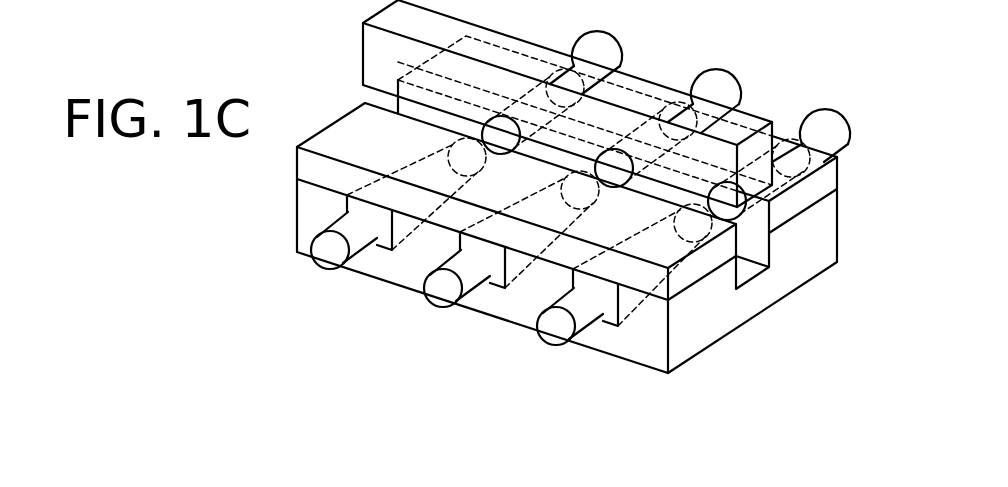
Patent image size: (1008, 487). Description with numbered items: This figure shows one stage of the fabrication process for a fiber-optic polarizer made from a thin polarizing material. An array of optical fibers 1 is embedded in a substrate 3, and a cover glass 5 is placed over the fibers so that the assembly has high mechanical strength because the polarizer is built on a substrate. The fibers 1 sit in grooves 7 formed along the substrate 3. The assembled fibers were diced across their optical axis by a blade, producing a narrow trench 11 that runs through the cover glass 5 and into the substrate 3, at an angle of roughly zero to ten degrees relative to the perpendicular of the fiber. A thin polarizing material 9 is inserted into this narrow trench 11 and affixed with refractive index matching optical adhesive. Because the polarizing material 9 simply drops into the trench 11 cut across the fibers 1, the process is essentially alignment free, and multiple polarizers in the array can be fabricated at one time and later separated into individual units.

The optical fibers 1 is at (447, 305).
The base block 3 is at (825, 250).
The lid 5 is at (828, 180).
The fiber grooves 7 is at (614, 318).
The coated fiber portions 9 is at (712, 88).
The slot 11 is at (745, 264).